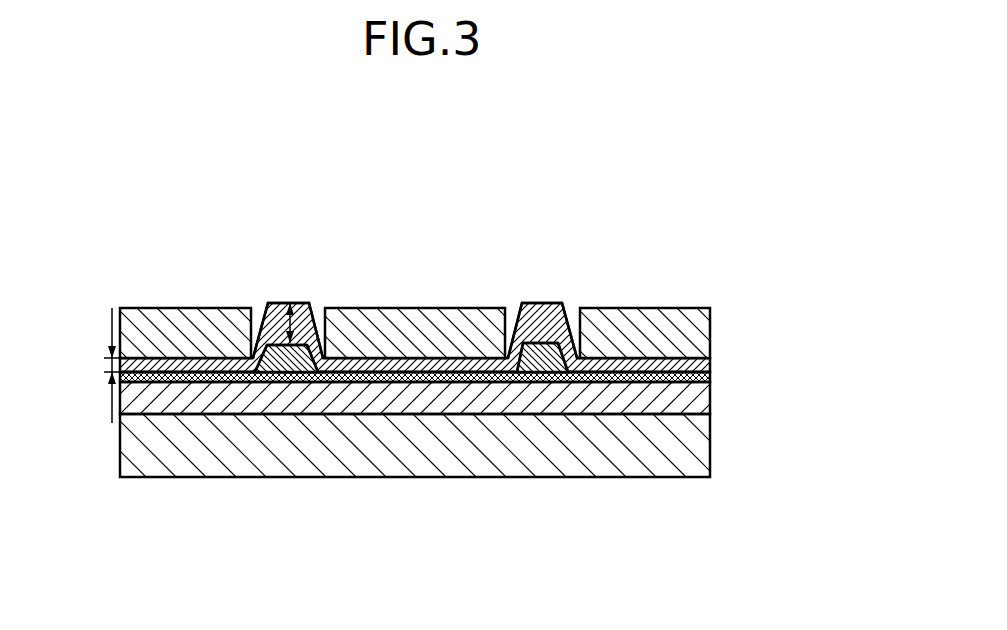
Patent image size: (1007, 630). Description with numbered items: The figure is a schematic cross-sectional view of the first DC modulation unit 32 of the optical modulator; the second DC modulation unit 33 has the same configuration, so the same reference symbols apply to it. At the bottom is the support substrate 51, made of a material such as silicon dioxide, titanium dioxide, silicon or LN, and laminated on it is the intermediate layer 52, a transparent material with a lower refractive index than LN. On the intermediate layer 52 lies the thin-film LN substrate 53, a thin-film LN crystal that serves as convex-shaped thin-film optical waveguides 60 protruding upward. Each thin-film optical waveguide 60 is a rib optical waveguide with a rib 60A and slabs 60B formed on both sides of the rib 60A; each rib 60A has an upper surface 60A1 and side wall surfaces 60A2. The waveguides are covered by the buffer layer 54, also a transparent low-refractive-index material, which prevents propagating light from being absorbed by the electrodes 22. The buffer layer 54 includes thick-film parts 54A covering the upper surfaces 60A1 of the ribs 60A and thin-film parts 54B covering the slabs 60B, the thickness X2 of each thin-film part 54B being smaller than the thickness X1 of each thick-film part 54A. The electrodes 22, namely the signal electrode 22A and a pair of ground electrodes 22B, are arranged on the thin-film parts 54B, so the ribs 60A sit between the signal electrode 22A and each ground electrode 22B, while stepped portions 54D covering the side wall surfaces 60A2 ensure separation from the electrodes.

The first DC modulation unit 32 is at (826, 180).
The second DC modulation unit 33 is at (418, 341).
The support substrate 51 is at (693, 453).
The intermediate layer 52 is at (698, 395).
The thin-film LN substrate 53 is at (697, 375).
The buffer layer 54 is at (710, 363).
The thick-film part 54A is at (292, 303).
The thin-film part 54B is at (210, 355).
The stepped portion 54D is at (255, 368).
The thin-film optical waveguide 60 is at (399, 341).
The rib 60A is at (568, 362).
The upper surface of the rib 60A1 is at (257, 353).
The side wall surface of the rib 60A2 is at (257, 338).
The slab 60B is at (200, 378).
The electrode 22 is at (428, 300).
The signal electrode 22A is at (457, 318).
The ground electrode 22B is at (140, 316).
The thickness of the thick-film part X1 is at (312, 310).
The thickness of the thin-film part X2 is at (110, 358).